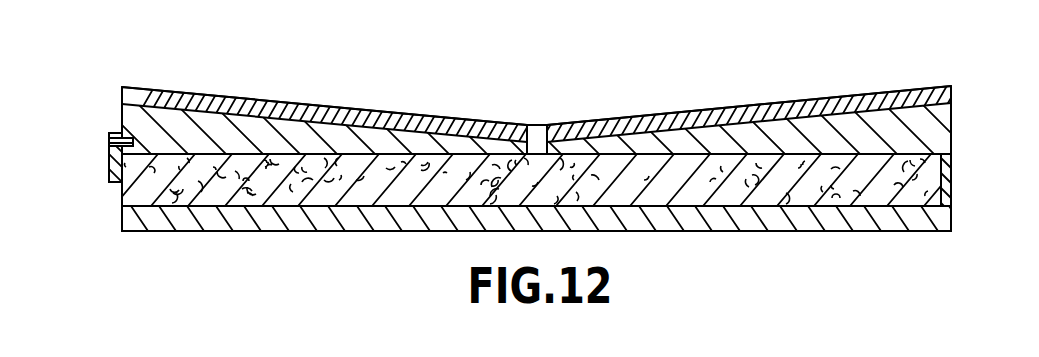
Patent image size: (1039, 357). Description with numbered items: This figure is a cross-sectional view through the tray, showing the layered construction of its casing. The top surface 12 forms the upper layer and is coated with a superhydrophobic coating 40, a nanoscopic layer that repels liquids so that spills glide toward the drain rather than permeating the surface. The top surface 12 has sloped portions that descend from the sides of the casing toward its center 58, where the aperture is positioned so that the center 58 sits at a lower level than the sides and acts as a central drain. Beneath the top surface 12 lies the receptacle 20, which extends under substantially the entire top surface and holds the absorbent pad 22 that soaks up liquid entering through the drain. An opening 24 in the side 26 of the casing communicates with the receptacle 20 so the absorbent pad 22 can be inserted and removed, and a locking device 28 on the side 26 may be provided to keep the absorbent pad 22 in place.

The top surface 12 is at (775, 102).
The receptacle 20 is at (945, 173).
The absorbent pad 22 is at (200, 193).
The opening 24 is at (123, 200).
The side 26 is at (122, 120).
The locking device 28 is at (109, 156).
The superhydrophobic coating 40 is at (173, 92).
The center 58 is at (537, 133).